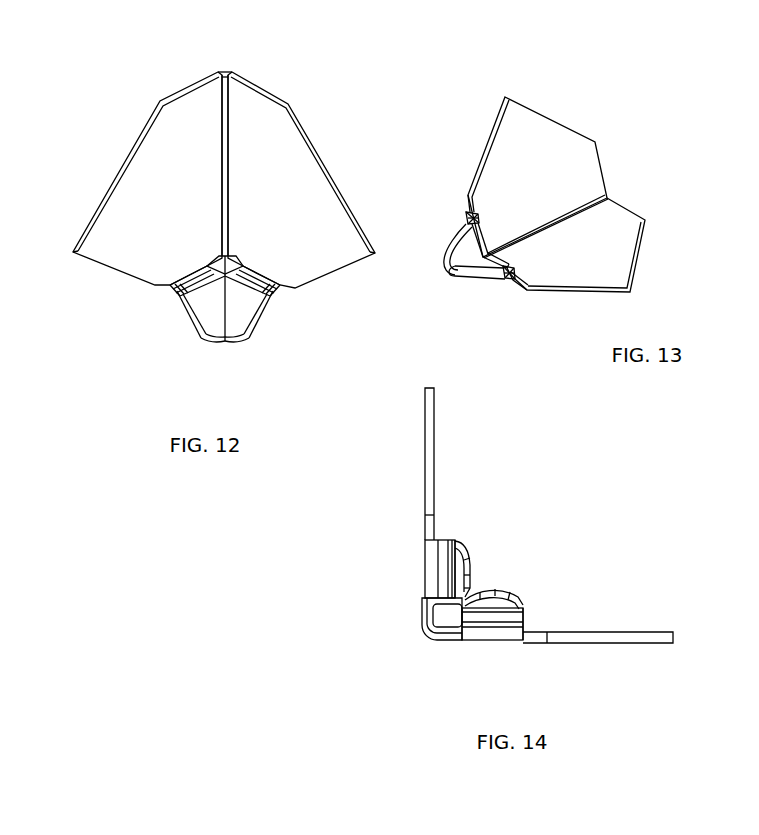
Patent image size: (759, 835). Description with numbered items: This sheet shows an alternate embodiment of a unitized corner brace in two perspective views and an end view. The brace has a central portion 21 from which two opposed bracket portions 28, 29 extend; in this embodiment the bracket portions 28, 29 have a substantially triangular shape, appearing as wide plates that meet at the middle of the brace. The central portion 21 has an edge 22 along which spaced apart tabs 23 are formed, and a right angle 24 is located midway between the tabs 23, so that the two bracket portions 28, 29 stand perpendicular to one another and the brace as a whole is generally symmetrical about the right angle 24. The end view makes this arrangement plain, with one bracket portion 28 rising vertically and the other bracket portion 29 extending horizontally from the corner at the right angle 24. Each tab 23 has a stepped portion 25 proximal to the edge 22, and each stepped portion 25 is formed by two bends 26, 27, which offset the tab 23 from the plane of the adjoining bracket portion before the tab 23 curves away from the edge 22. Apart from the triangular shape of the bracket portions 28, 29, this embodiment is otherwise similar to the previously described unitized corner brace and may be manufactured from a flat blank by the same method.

In FIG. 12, the central portion 21 is at (240, 153).
In FIG. 13, the central portion 21 is at (562, 183).
In FIG. 12, the edge 22 is at (283, 288).
In FIG. 13, the edge 22 is at (523, 296).
In FIG. 14, the edge 22 is at (540, 645).
In FIG. 12, the tab 23 is at (200, 332).
In FIG. 13, the tab 23 is at (441, 259).
In FIG. 14, the tab 23 is at (463, 552).
In FIG. 12, the right angle 24 is at (230, 82).
In FIG. 13, the right angle 24 is at (577, 223).
In FIG. 14, the right angle 24 is at (425, 635).
In FIG. 12, the stepped portion 25 is at (178, 292).
In FIG. 13, the stepped portion 25 is at (467, 218).
In FIG. 14, the stepped portion 25 is at (443, 545).
In FIG. 12, the bend 26 is at (175, 287).
In FIG. 13, the bend 26 is at (467, 213).
In FIG. 14, the bend 26 is at (428, 567).
In FIG. 12, the bend 27 is at (186, 297).
In FIG. 13, the bend 27 is at (466, 223).
In FIG. 14, the bend 27 is at (455, 545).
In FIG. 12, the bracket portion 28 is at (135, 202).
In FIG. 13, the bracket portion 28 is at (508, 147).
In FIG. 14, the bracket portion 28 is at (428, 457).
In FIG. 12, the bracket portion 29 is at (310, 195).
In FIG. 13, the bracket portion 29 is at (608, 256).
In FIG. 14, the bracket portion 29 is at (613, 635).